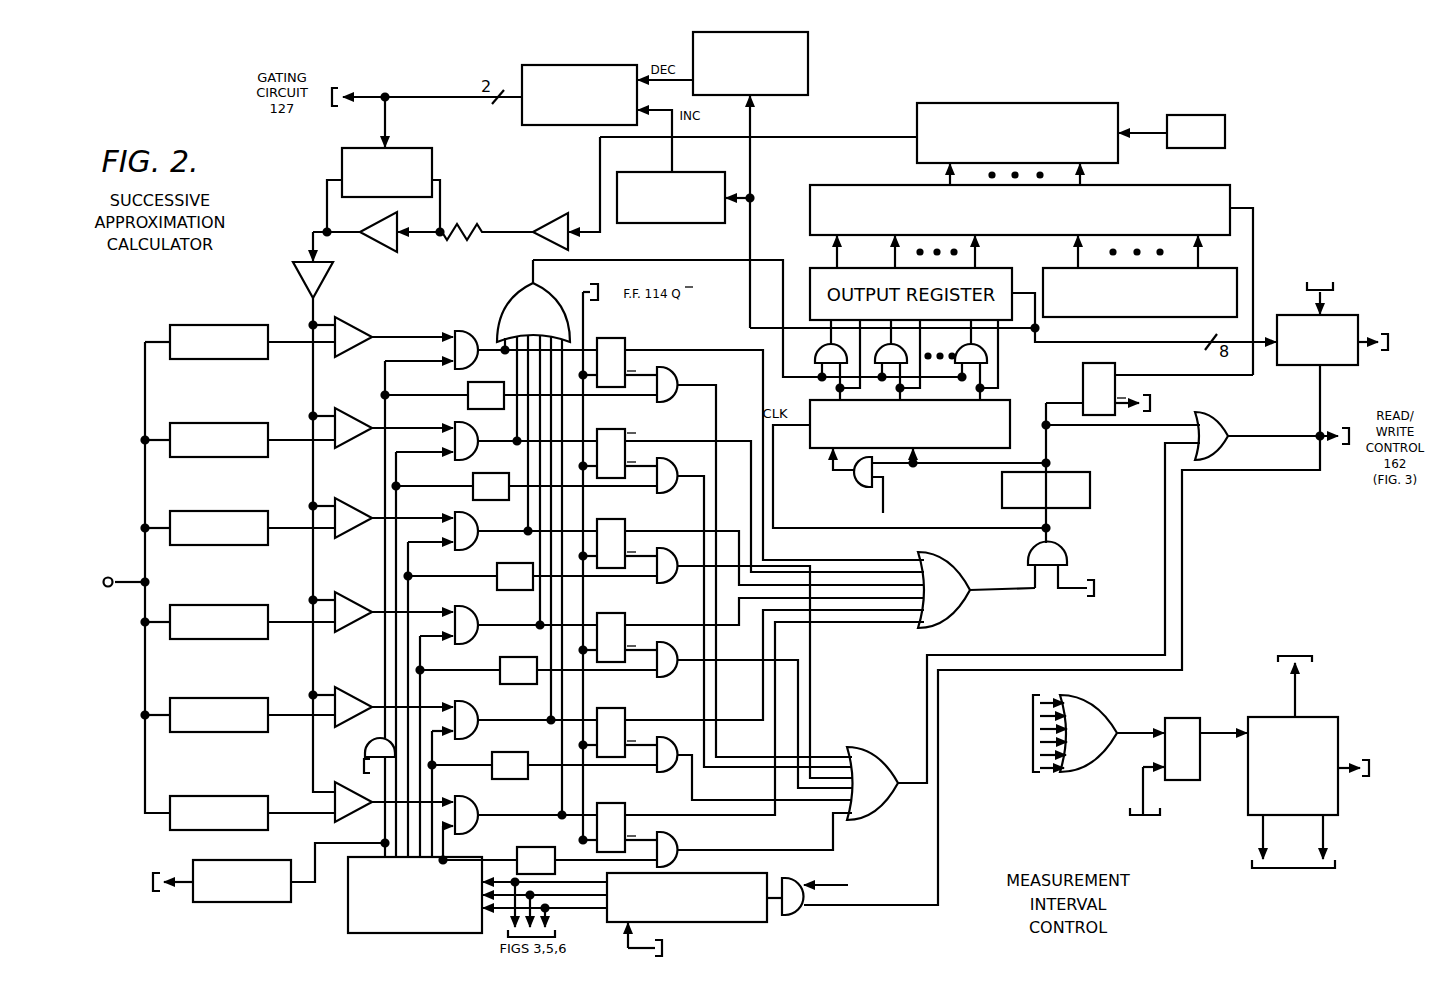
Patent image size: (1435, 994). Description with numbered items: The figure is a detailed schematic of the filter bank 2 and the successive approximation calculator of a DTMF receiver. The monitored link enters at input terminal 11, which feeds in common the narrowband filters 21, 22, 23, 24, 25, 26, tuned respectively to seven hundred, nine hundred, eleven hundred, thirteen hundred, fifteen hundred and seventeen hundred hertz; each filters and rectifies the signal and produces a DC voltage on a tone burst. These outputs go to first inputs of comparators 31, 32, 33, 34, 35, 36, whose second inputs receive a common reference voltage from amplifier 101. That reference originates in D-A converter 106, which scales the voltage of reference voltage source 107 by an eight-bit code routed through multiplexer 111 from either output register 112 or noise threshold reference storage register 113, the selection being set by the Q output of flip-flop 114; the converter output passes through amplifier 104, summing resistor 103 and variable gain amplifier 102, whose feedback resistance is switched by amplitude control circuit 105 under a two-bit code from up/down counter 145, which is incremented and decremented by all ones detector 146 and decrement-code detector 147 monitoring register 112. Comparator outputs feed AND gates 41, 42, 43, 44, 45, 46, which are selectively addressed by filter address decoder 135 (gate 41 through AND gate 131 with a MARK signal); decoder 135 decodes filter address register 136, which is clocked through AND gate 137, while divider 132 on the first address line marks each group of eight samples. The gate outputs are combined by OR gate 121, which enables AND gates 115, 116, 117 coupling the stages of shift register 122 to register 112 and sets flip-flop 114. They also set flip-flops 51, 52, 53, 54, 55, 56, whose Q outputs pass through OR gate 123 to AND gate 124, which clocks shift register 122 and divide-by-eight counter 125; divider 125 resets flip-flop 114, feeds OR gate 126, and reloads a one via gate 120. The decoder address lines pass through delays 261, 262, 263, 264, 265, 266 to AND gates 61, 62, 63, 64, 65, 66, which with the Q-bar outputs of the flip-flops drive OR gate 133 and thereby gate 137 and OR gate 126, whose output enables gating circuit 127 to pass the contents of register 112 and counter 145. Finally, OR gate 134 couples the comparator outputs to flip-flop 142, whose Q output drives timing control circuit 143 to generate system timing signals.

The filter bank 2 is at (214, 503).
The input terminal 11 is at (106, 587).
The narrowband filter 21 is at (238, 325).
The narrowband filter 22 is at (238, 423).
The narrowband filter 23 is at (266, 541).
The narrowband filter 24 is at (238, 605).
The narrowband filter 25 is at (238, 698).
The narrowband filter 26 is at (238, 796).
The comparator 31 is at (358, 326).
The comparator 32 is at (369, 402).
The comparator 33 is at (362, 504).
The comparator 34 is at (368, 586).
The comparator 35 is at (368, 680).
The comparator 36 is at (352, 822).
The AND gate 41 is at (466, 369).
The AND gate 42 is at (466, 460).
The AND gate 43 is at (466, 550).
The AND gate 44 is at (468, 644).
The AND gate 45 is at (468, 739).
The AND gate 46 is at (470, 800).
The flip-flop 51 is at (605, 338).
The flip-flop 52 is at (612, 429).
The flip-flop 53 is at (618, 508).
The flip-flop 54 is at (618, 602).
The flip-flop 55 is at (618, 697).
The flip-flop 56 is at (618, 792).
The AND gate 61 is at (668, 367).
The AND gate 62 is at (668, 458).
The AND gate 63 is at (668, 548).
The AND gate 64 is at (668, 642).
The AND gate 65 is at (668, 737).
The AND gate 66 is at (675, 838).
The amplifier 101 is at (325, 281).
The variable gain amplifier 102 is at (372, 244).
The summing resistor 103 is at (468, 242).
The amplifier 104 is at (542, 220).
The amplitude control circuit 105 is at (432, 155).
The digital-to-analog converter 106 is at (1082, 103).
The reference voltage source 107 is at (1192, 115).
The multiplexer 111 is at (878, 185).
The output register 112 is at (895, 257).
The noise threshold reference storage register 113 is at (1212, 268).
The flip-flop 114 is at (1085, 363).
The AND gate 115 is at (822, 351).
The AND gate 116 is at (905, 351).
The AND gate 117 is at (985, 357).
The gate 120 is at (857, 484).
The OR gate 121 is at (497, 306).
The shift register 122 is at (1010, 408).
The OR gate 123 is at (960, 566).
The AND gate 124 is at (1062, 550).
The divide-by-eight counter 125 is at (1090, 490).
The OR gate 126 is at (1228, 428).
The gating circuit 127 is at (1340, 315).
The AND gate 131 is at (363, 750).
The divider 132 is at (250, 902).
The OR gate 133 is at (878, 749).
The OR gate 134 is at (1110, 707).
The filter address decoder 135 is at (400, 933).
The filter address register 136 is at (767, 915).
The AND gate 137 is at (798, 879).
The flip-flop 142 is at (1185, 718).
The timing control circuit 143 is at (1338, 722).
The up/down counter 145 is at (590, 65).
The all ones detector 146 is at (697, 172).
The decrement-code detector 147 is at (808, 50).
The delay 261 is at (482, 382).
The delay 262 is at (495, 473).
The delay 263 is at (518, 563).
The delay 264 is at (530, 657).
The delay 265 is at (505, 752).
The delay 266 is at (545, 846).